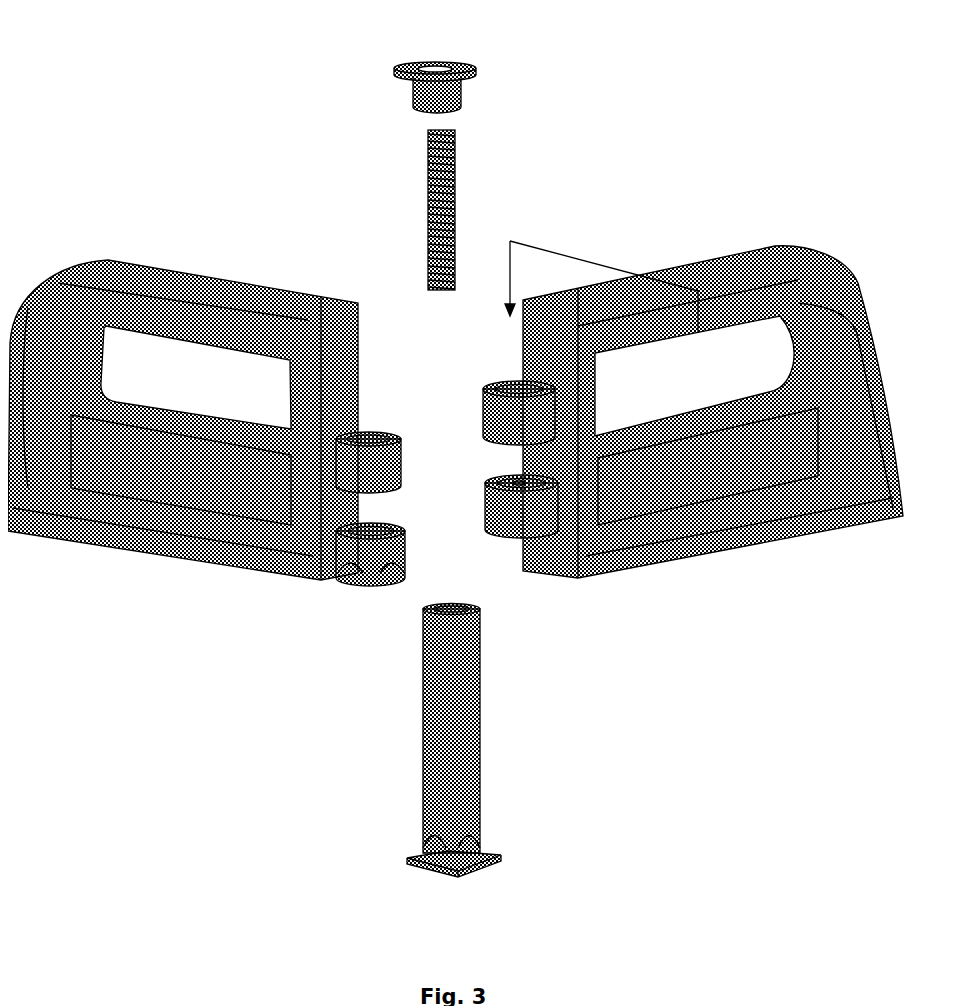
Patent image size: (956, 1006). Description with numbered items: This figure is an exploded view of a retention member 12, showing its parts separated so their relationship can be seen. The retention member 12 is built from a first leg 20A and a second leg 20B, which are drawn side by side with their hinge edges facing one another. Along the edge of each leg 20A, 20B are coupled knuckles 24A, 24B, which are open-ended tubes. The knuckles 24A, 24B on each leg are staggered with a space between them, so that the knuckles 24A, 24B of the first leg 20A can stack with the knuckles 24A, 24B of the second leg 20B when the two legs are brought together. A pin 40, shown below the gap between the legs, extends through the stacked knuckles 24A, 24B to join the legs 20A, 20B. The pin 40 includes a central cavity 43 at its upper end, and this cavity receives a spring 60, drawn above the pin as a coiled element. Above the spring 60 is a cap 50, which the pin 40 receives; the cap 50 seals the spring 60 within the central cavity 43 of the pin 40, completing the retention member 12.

The retention member 12 is at (648, 197).
The first leg 20A is at (143, 560).
The second leg 20B is at (735, 562).
The knuckle 24A is at (387, 462).
The knuckle 24B is at (355, 555).
The pin 40 is at (457, 732).
The central cavity 43 is at (432, 601).
The cap 50 is at (449, 57).
The spring 60 is at (447, 168).